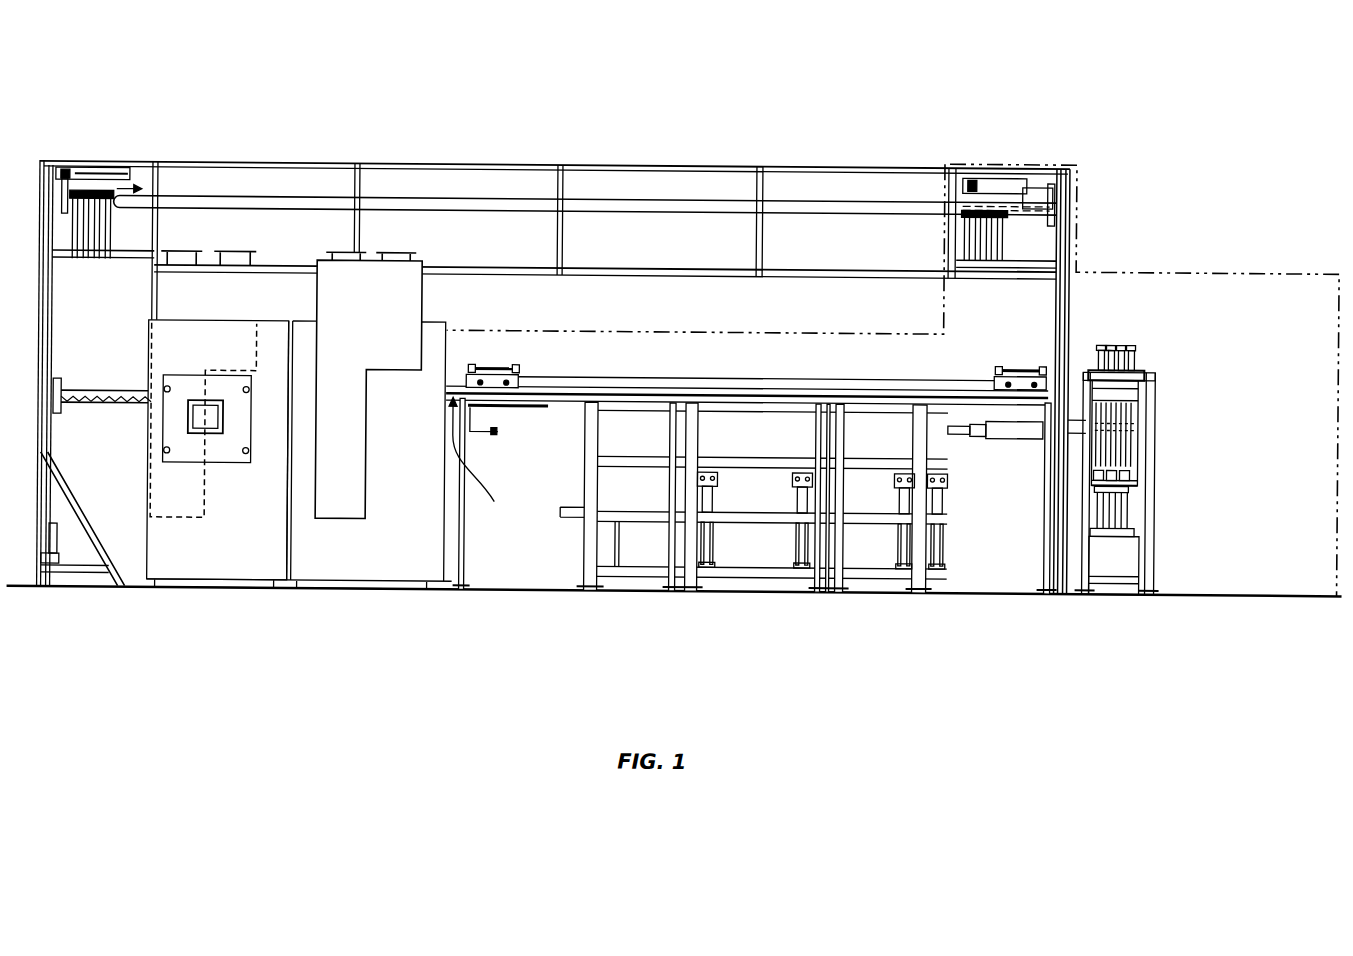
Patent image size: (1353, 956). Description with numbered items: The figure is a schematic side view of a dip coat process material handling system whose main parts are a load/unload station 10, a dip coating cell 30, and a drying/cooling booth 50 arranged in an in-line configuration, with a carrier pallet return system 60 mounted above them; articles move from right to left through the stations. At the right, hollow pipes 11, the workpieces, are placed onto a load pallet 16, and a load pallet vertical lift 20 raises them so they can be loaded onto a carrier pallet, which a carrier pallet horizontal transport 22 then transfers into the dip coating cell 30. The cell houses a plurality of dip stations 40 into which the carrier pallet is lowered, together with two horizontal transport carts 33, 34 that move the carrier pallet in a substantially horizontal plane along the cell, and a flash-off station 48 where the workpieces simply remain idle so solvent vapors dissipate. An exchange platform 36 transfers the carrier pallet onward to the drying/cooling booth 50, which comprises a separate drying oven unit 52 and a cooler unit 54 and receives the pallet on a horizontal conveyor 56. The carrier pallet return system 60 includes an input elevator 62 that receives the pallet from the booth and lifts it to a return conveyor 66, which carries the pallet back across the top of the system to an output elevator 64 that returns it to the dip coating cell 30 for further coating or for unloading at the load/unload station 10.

The load/unload station 10 is at (1211, 354).
The hollow pipes 11 is at (1137, 438).
The load pallet 16 is at (1134, 471).
The load pallet vertical lift 20 is at (1137, 499).
The carrier pallet horizontal transport 22 is at (1018, 430).
The dip coating cell 30 is at (965, 350).
The horizontal transport cart 33 is at (1023, 359).
The horizontal transport cart 34 is at (524, 361).
The exchange platform 36 is at (498, 410).
The dip stations 40 is at (730, 492).
The flash-off station 48 is at (514, 570).
The drying/cooling booth 50 is at (439, 299).
The drying oven unit 52 is at (369, 566).
The cooler unit 54 is at (217, 568).
The horizontal conveyor 56 is at (479, 462).
The carrier pallet return system 60 is at (97, 144).
The input elevator 62 is at (64, 425).
The output elevator 64 is at (1054, 200).
The return conveyor 66 is at (643, 200).